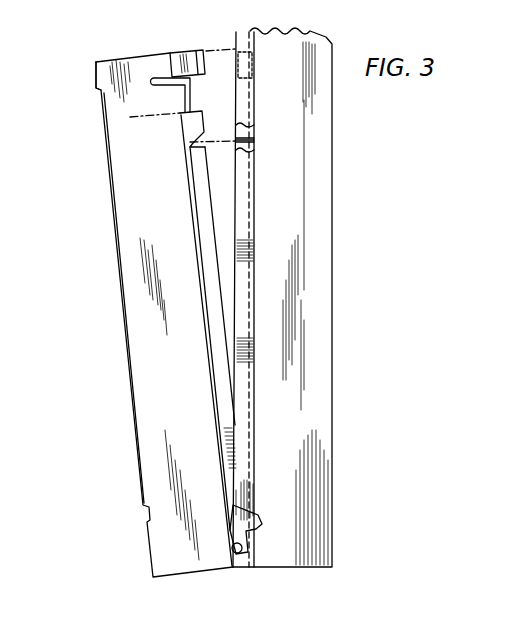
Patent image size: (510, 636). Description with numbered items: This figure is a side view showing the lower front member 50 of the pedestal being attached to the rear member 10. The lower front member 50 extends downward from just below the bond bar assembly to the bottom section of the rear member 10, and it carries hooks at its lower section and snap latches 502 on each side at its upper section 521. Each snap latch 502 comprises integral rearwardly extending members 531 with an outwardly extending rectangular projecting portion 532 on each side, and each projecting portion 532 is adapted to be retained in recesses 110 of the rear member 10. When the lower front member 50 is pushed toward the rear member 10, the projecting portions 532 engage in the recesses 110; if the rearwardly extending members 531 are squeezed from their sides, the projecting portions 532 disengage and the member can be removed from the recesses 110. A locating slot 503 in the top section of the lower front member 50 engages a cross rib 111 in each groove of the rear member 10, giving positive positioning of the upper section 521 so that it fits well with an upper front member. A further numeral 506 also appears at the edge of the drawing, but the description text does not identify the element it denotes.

The rear member 10 is at (332, 198).
The lower front member 50 is at (116, 249).
The recesses 110 is at (247, 64).
The cross rib 111 is at (257, 142).
The snap latch 502 is at (188, 60).
The locating slot 503 is at (188, 161).
The panel bottom member 506 is at (485, 631).
The upper section 521 is at (97, 70).
The rearwardly extending members 531 is at (182, 67).
The projecting portion 532 is at (205, 66).